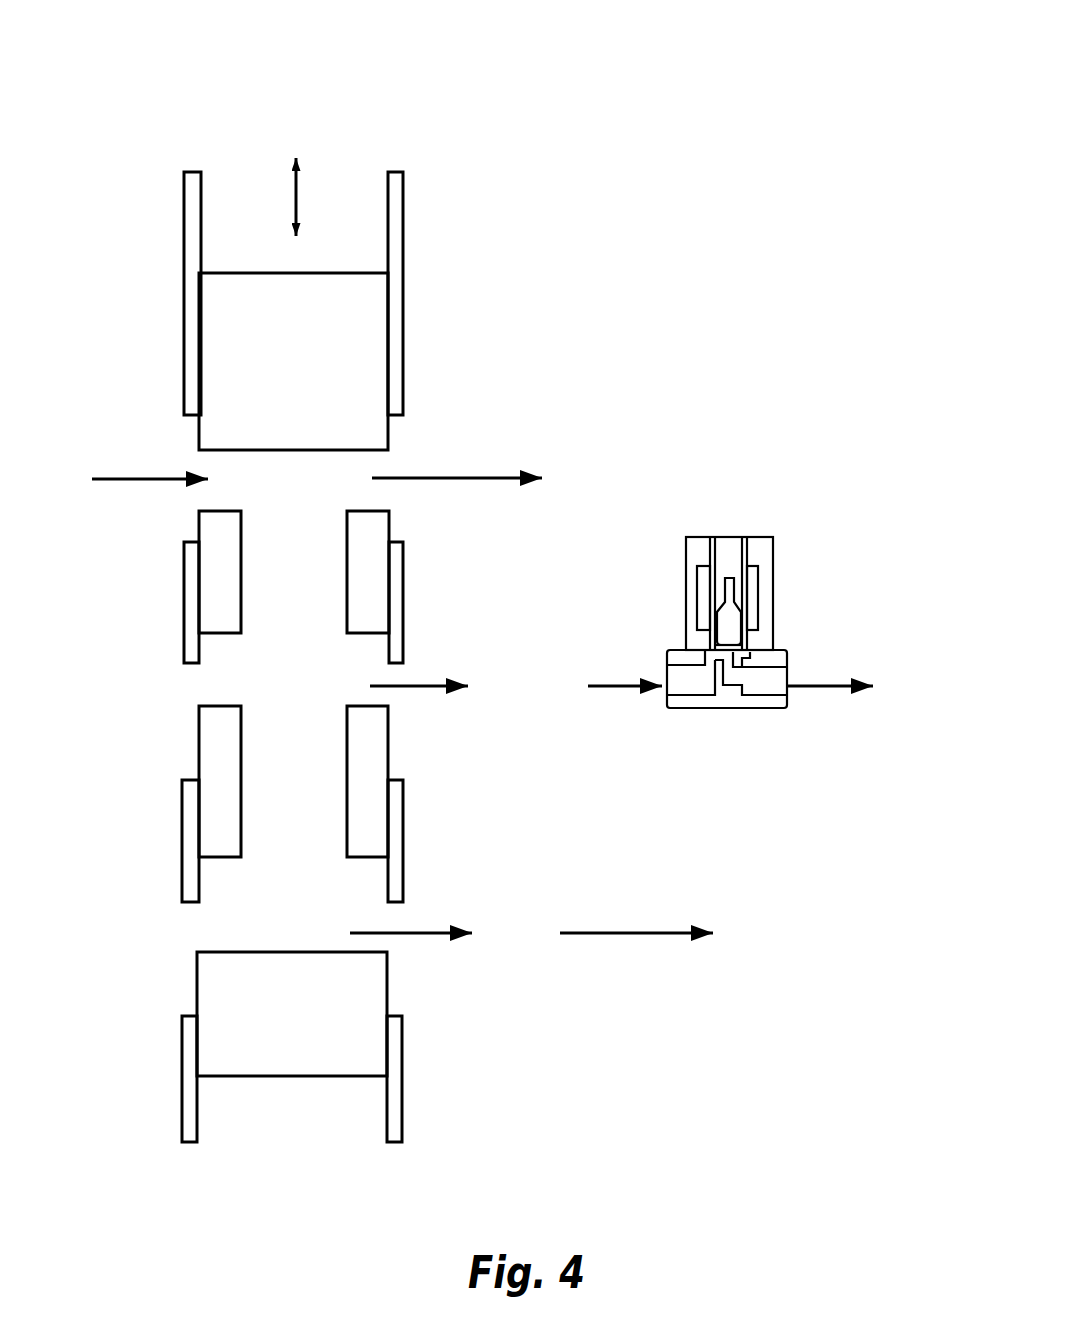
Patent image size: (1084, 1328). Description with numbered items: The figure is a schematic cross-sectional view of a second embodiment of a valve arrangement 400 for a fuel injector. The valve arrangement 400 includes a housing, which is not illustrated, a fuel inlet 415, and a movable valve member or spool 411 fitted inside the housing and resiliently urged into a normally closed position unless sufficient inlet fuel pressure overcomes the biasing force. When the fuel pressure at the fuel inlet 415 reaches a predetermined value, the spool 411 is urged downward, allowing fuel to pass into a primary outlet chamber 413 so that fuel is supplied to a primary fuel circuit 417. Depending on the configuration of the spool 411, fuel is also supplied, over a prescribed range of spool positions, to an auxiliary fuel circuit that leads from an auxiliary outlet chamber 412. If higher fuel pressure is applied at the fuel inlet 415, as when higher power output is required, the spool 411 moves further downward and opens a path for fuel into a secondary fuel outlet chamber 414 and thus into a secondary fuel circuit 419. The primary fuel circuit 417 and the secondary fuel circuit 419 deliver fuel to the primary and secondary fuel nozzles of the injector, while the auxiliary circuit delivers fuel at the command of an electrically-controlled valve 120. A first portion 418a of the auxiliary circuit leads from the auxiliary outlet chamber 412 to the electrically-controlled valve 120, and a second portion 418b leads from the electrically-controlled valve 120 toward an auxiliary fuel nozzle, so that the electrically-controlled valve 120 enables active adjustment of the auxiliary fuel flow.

The valve arrangement 400 is at (121, 188).
The valve spool 411 is at (303, 367).
The primary outlet chamber 413 is at (372, 468).
The primary fuel circuit 417 is at (538, 460).
The fuel inlet 415 is at (122, 481).
The electrically-controlled valve 120 is at (787, 550).
The auxiliary outlet chamber 412 is at (384, 673).
The first portion of auxiliary fuel circuit 418a is at (467, 697).
The second portion of auxiliary fuel circuit 418b is at (850, 709).
The secondary fuel outlet chamber 414 is at (386, 918).
The secondary fuel circuit 419 is at (627, 936).